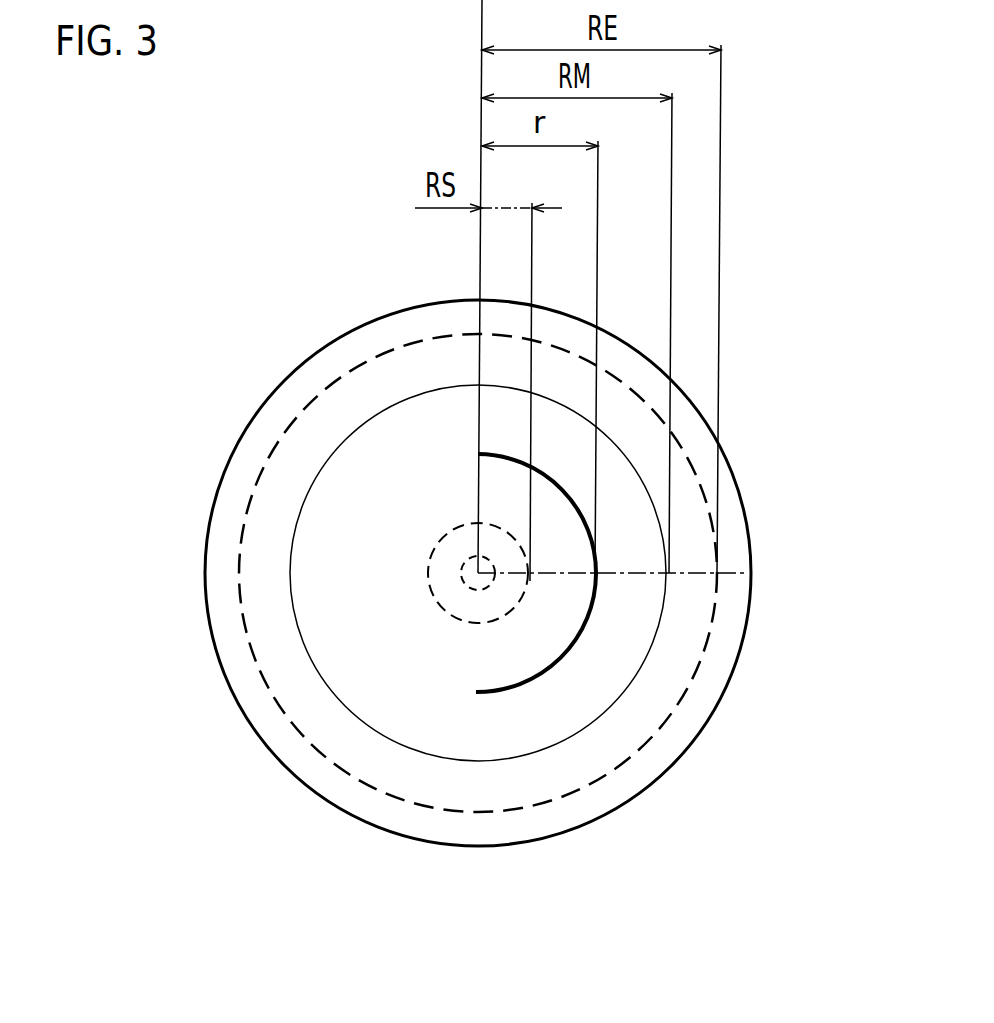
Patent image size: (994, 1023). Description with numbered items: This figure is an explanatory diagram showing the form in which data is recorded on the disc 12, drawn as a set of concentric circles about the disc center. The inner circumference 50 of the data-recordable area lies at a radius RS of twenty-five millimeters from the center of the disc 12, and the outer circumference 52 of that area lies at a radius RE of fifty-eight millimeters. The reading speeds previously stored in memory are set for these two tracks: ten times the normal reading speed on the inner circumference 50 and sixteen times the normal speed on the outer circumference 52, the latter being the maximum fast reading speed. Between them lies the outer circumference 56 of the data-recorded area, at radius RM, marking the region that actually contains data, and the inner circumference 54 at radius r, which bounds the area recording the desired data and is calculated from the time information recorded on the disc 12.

The disc 12 is at (787, 405).
The inner circumference 50 is at (447, 613).
The outer circumference 52 is at (277, 708).
The inner circumference of the area recording the desired data 54 is at (538, 677).
The outer circumference of the data-recorded area 56 is at (658, 633).